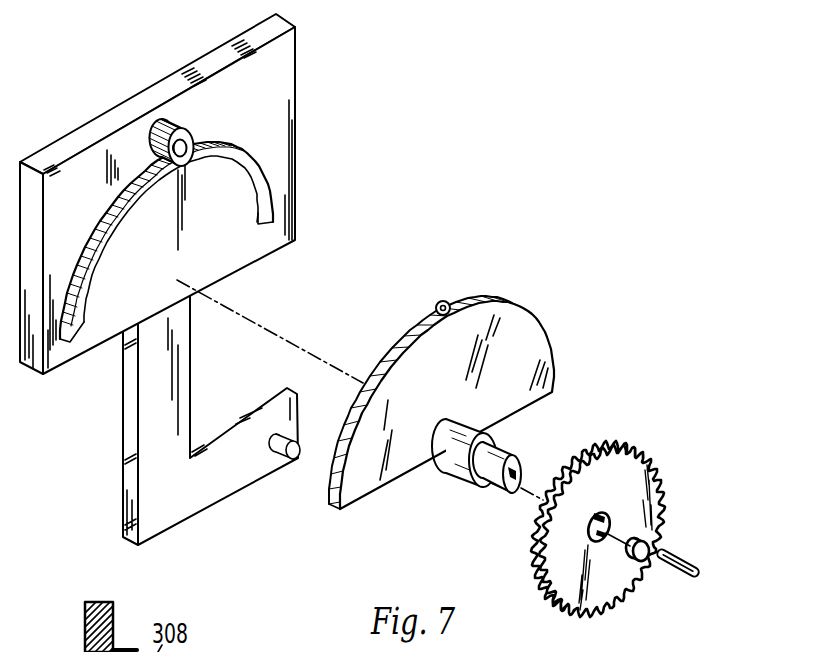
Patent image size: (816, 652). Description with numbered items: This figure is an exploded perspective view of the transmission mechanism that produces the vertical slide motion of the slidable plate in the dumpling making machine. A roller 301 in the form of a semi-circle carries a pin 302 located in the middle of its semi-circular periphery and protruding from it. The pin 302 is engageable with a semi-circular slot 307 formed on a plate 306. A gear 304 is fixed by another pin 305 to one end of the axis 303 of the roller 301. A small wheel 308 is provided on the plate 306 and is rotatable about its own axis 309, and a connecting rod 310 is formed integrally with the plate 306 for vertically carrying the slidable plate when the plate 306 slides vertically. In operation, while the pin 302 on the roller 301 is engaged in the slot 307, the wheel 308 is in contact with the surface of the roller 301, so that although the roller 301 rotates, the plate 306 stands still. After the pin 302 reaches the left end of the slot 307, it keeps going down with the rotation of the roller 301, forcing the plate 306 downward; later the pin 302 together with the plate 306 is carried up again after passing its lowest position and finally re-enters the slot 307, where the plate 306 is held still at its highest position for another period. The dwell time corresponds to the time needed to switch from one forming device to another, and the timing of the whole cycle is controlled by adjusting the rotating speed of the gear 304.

The roller 301 is at (520, 338).
The pin 302 is at (445, 301).
The axis 303 is at (485, 438).
The gear 304 is at (642, 462).
The pin 305 is at (667, 565).
The plate 306 is at (280, 78).
The semi-circular slot 307 is at (255, 180).
The small wheel 308 is at (172, 122).
The axis 309 is at (158, 128).
The connecting rod 310 is at (55, 650).